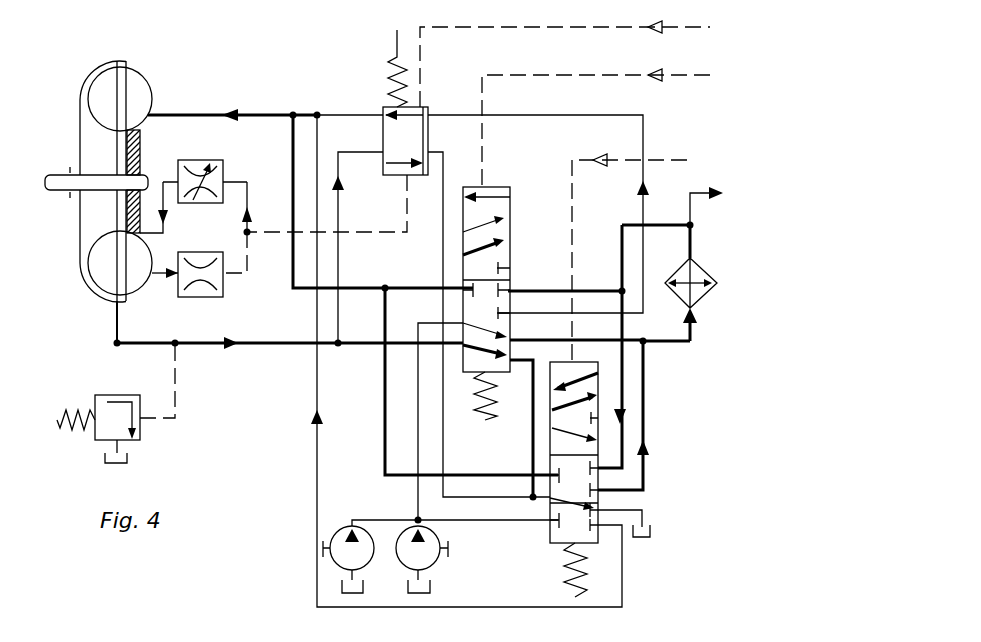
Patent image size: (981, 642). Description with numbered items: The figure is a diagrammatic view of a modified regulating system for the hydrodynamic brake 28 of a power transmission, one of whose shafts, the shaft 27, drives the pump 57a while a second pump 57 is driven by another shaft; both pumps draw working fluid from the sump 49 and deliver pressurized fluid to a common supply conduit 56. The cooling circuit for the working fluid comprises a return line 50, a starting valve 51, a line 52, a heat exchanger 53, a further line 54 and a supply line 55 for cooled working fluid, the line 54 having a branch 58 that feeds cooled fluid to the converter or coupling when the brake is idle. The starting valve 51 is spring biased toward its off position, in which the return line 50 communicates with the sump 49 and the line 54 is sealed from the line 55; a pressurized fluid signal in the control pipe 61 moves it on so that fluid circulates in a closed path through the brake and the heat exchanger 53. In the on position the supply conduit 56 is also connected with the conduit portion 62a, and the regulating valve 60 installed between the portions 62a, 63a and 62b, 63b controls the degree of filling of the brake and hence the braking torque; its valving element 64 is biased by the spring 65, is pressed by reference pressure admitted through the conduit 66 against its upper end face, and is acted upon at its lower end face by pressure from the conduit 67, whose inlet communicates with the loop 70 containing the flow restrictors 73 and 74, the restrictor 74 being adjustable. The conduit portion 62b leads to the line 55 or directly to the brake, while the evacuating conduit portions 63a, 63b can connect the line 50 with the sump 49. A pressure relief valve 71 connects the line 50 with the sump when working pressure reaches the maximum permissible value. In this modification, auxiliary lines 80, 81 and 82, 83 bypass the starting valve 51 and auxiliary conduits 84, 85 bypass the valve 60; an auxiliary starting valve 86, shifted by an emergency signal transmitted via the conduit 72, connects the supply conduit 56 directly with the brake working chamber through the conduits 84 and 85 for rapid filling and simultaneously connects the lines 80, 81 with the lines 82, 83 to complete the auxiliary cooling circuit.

The hydrodynamic brake 28 is at (148, 59).
The shaft 27 is at (65, 186).
The adjustable flow restrictor 74 is at (193, 167).
The loop 70 is at (243, 240).
The flow restrictor 73 is at (212, 293).
The pressure relief valve 71 is at (108, 403).
The return line 50 is at (153, 345).
The supply line 55 is at (293, 163).
The conduit portion 62b is at (307, 113).
The regulating valve 60 is at (377, 104).
The valving element 64 is at (388, 125).
The spring 65 is at (394, 57).
The conduit 66 is at (482, 28).
The conduit portion 62a is at (505, 115).
The control pipe 61 is at (623, 77).
The conduit 72 is at (570, 173).
The branch 58 is at (697, 187).
The starting valve 51 is at (503, 232).
The line 54 is at (606, 255).
The heat exchanger 53 is at (697, 270).
The line 52 is at (668, 343).
The evacuating conduit portion 63a is at (339, 214).
The conduit 67 is at (343, 233).
The auxiliary line 83 is at (385, 392).
The auxiliary line 80 is at (533, 438).
The auxiliary line 82 is at (622, 393).
The auxiliary line 81 is at (645, 477).
The auxiliary starting valve 86 is at (585, 538).
The sump 49 is at (650, 532).
The supply conduit 56 is at (415, 495).
The evacuating conduit portion 63b is at (457, 498).
The auxiliary conduit 84 is at (510, 523).
The pump 57a is at (338, 533).
The auxiliary conduit 85 is at (320, 548).
The pump 57 is at (410, 557).